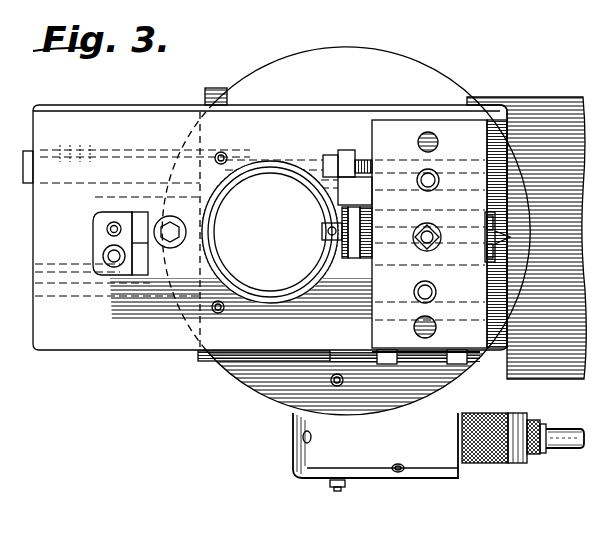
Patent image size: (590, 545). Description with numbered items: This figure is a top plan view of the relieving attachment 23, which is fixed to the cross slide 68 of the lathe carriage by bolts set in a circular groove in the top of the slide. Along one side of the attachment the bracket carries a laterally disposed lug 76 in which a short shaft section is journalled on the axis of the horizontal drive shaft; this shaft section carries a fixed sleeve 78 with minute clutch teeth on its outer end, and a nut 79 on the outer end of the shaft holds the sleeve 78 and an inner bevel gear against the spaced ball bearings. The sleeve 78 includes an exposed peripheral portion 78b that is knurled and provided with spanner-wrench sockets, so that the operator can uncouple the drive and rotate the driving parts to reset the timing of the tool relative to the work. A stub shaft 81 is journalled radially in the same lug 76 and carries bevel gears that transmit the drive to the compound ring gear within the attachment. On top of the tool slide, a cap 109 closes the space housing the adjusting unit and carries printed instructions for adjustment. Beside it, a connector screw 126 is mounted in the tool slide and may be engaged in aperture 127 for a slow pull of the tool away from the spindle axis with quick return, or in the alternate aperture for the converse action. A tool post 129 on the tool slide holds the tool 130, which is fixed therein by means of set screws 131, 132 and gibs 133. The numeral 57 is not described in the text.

The relieving attachment 23 is at (443, 82).
The slide plate 57 is at (465, 102).
The cross slide 68 is at (540, 108).
The lug 76 is at (430, 479).
The sleeve 78 is at (468, 468).
The exposed peripheral portion 78b is at (500, 470).
The nut 79 is at (550, 430).
The stub shaft 81 is at (336, 490).
The cap 109 is at (268, 176).
The connector screw 126 is at (172, 224).
The aperture 127 is at (109, 223).
The tool post 129 is at (400, 130).
The tool 130 is at (510, 236).
The set screw 131 is at (350, 230).
The set screw 132 is at (424, 234).
The gibs 133 is at (505, 249).